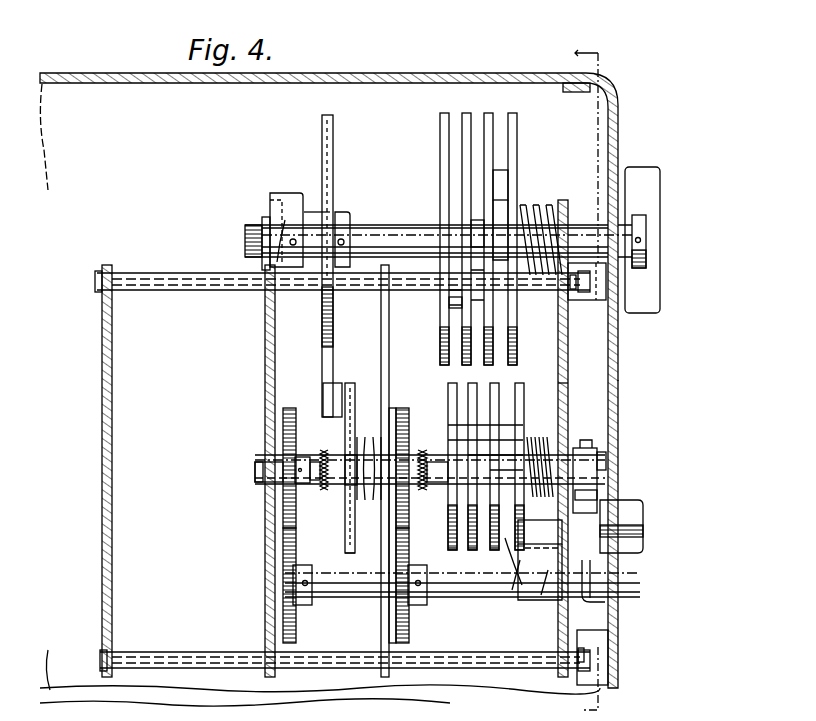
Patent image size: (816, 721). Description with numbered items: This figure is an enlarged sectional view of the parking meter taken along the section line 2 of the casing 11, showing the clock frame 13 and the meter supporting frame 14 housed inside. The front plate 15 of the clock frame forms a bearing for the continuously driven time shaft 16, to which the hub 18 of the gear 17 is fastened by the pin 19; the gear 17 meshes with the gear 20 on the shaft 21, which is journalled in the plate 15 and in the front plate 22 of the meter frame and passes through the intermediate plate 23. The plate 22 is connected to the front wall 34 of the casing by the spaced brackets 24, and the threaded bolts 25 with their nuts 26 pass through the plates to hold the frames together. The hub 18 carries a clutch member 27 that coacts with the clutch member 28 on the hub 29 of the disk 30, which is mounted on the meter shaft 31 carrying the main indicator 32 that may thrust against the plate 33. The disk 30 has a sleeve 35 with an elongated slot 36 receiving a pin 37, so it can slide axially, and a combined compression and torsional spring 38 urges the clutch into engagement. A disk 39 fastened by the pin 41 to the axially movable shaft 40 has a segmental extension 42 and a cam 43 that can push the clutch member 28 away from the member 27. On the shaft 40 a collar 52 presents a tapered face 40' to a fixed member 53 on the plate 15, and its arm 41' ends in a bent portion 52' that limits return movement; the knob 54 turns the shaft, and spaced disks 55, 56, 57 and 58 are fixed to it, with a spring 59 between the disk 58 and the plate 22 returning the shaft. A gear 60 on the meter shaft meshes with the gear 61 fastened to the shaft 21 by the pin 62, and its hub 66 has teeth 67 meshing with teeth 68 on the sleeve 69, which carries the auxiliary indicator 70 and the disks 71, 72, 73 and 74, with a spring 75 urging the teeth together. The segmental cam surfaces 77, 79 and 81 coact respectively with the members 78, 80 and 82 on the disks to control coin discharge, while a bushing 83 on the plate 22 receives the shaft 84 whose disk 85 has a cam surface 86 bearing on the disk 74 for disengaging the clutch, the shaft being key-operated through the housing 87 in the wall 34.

The casing 11 is at (498, 73).
The section line 2 is at (583, 384).
The clock frame 13 is at (102, 470).
The meter supporting frame 14 is at (335, 653).
The front plate 15 is at (265, 520).
The time shaft 16 is at (295, 470).
The gear 17 is at (288, 408).
The hub 18 is at (310, 466).
The pin 19 is at (283, 480).
The gear 20 is at (290, 560).
The shaft 21 is at (314, 596).
The front plate 22 is at (558, 620).
The plate 23 is at (389, 604).
The brackets 24 is at (588, 301).
The threaded bolts 25 is at (180, 291).
The nuts 26 is at (100, 658).
The clutch member 27 is at (270, 462).
The clutch member 28 is at (322, 452).
The hub 29 is at (328, 452).
The disk 30 is at (345, 552).
The meter shaft 31 is at (606, 456).
The main indicator 32 is at (597, 494).
The plate 33 is at (606, 465).
The front wall 34 is at (618, 380).
The hub or sleeve 35 is at (362, 437).
The elongated slot 36 is at (345, 490).
The pin 37 is at (350, 486).
The combined compression and torsional spring 38 is at (392, 408).
The disk 39 is at (333, 318).
The axially movable shaft 40 is at (438, 230).
The tapered face 40' is at (235, 241).
The pin 41 is at (352, 235).
The outwardly extending arm 41' is at (331, 190).
The segmental extension 42 is at (323, 397).
The cam 43 is at (348, 383).
The collar 52 is at (289, 218).
The bent end 52' is at (261, 214).
The fixed member 53 is at (264, 222).
The knob 54 is at (660, 170).
The disk 55 is at (440, 122).
The disk 56 is at (462, 133).
The disk 57 is at (493, 124).
The disk 58 is at (517, 128).
The combined torsional and compression spring 59 is at (535, 210).
The gear 60 is at (403, 408).
The gear 61 is at (409, 630).
The pin 62 is at (428, 597).
The hub 66 is at (436, 484).
The teeth 67 is at (420, 450).
The teeth 68 is at (428, 452).
The sleeve 69 is at (580, 448).
The auxiliary indicator 70 is at (605, 598).
The disk 71 is at (448, 547).
The disk 72 is at (472, 550).
The disk 73 is at (494, 550).
The disk 74 is at (515, 383).
The combined torsional and compression spring 75 is at (540, 440).
The segmental cam surface 77 is at (452, 430).
The member 78 is at (448, 320).
The segmental cam surface 79 is at (477, 398).
The member 80 is at (480, 302).
The segmental cam surface 81 is at (499, 418).
The member 82 is at (505, 185).
The bushing 83 is at (548, 585).
The revoluble shaft 84 is at (530, 580).
The disk 85 is at (519, 595).
The laterally offset cam surface 86 is at (510, 572).
The housing 87 is at (643, 520).